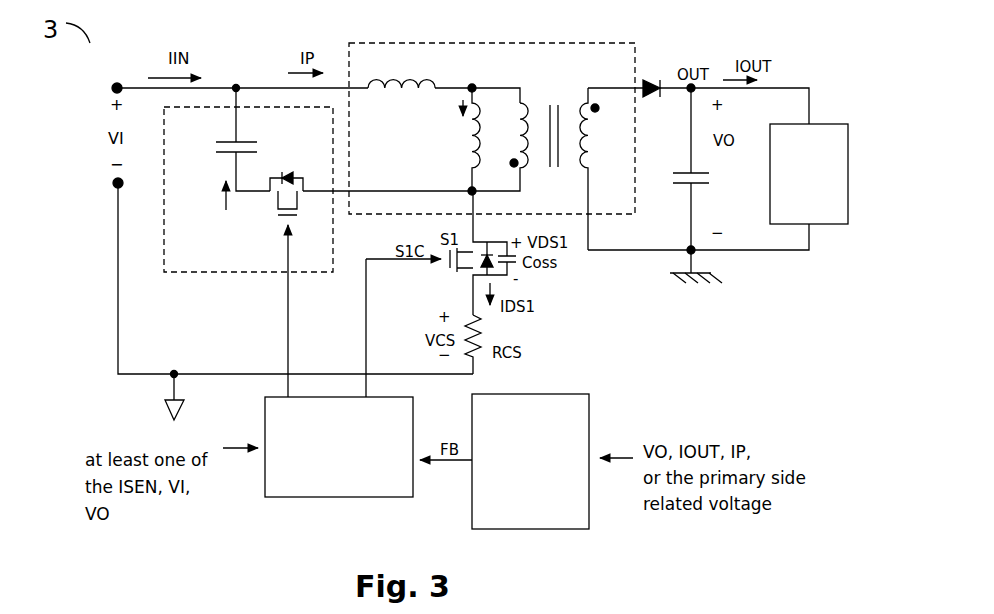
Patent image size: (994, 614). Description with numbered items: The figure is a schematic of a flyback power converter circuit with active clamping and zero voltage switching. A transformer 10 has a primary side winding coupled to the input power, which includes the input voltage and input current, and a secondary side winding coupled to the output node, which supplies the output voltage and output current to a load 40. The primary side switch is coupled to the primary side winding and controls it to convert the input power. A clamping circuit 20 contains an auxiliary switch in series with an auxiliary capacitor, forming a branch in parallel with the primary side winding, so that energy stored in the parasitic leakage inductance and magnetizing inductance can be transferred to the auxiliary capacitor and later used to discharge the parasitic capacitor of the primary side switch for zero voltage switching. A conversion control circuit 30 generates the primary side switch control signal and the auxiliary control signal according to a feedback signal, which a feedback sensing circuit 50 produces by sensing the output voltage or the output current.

The transformer 10 is at (492, 146).
The clamping circuit 20 is at (248, 242).
The conversion control circuit 30 is at (339, 447).
The load 40 is at (809, 174).
The feedback sensing circuit 50 is at (530, 461).